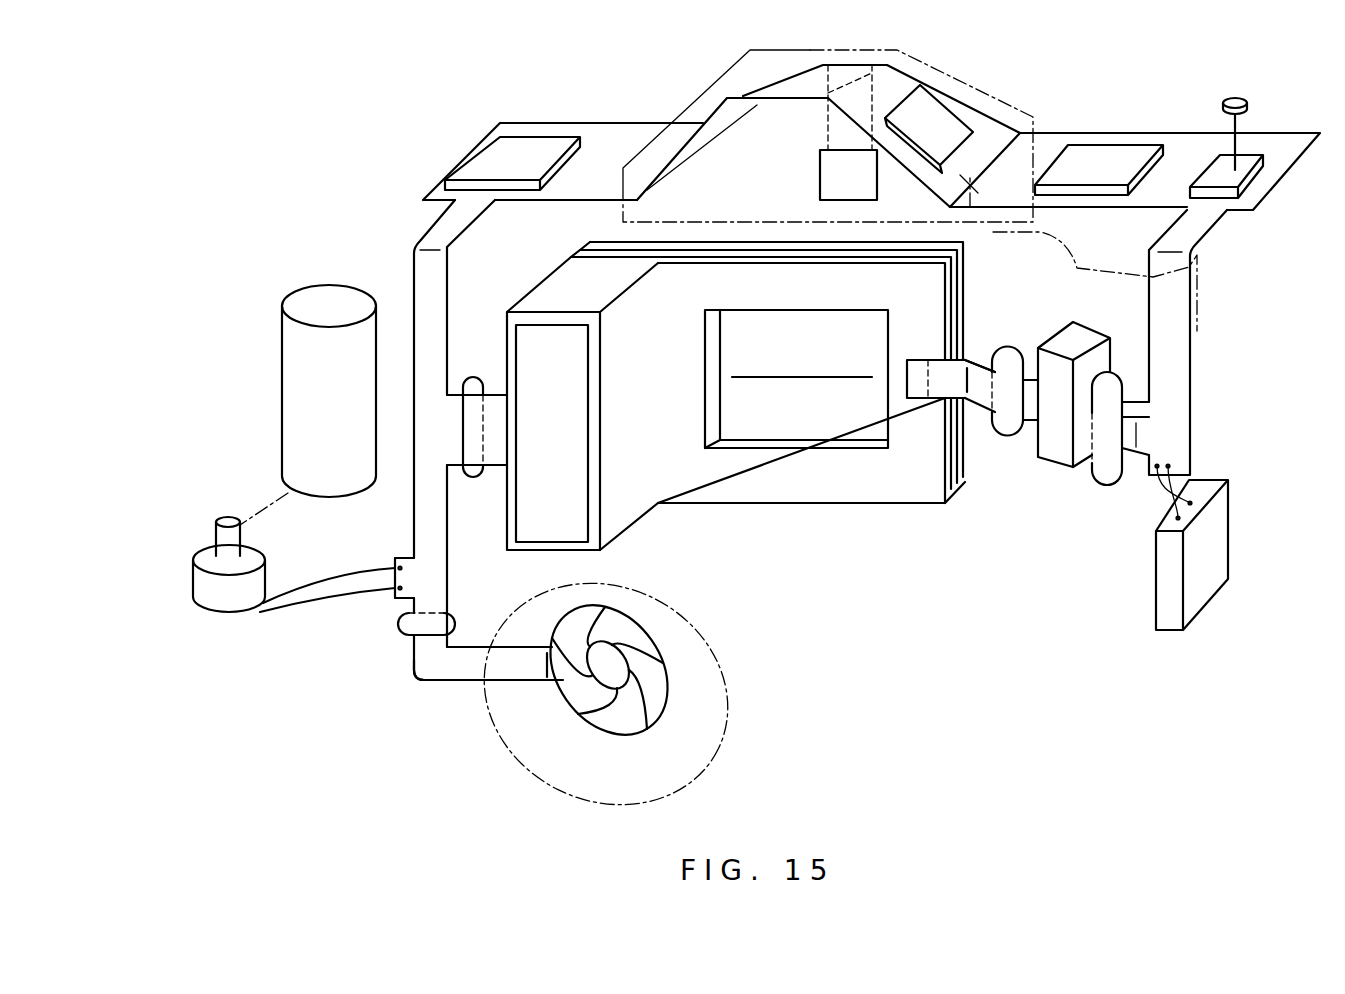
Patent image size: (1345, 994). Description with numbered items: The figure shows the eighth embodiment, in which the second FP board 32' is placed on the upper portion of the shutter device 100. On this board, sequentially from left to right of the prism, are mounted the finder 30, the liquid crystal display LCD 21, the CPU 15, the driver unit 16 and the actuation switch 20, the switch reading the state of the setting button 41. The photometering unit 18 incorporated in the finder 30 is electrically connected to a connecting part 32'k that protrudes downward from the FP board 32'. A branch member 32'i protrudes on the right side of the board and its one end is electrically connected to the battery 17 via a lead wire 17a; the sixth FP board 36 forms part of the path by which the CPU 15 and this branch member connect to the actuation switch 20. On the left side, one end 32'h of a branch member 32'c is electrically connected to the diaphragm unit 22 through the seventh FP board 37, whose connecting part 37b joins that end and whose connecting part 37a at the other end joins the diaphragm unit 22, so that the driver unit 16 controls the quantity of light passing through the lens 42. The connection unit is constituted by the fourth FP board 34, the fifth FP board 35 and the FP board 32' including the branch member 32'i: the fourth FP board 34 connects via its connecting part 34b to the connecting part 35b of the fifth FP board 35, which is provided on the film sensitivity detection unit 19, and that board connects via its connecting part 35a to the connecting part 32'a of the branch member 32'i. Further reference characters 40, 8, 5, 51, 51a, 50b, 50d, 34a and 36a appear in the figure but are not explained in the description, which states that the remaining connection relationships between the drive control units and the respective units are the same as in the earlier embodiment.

The finder 30 is at (717, 80).
The second FP board 32' is at (871, 133).
The connecting part 32'k is at (806, 110).
The branch member 32'c is at (412, 438).
The branch member 32'i is at (1205, 342).
The connecting part 32'a is at (1193, 417).
The end of branch member 32'h is at (386, 627).
The liquid crystal display LCD 21 is at (486, 152).
The CPU 15 is at (935, 115).
The driver unit 16 is at (1108, 148).
The setting button 41 is at (1235, 96).
The actuation switch 20 is at (1262, 176).
The photometering unit 18 is at (866, 192).
The grip portion outline 40 is at (1077, 268).
The film sensitivity detection unit 19 is at (1098, 336).
The display unit layers 8 is at (920, 362).
The frame 51 is at (522, 332).
The connector pin 51a is at (473, 378).
The connecting bridge 50b is at (472, 480).
The connector 50d is at (405, 558).
The display housing 5 is at (632, 507).
The shutter device 100 is at (845, 515).
The fourth FP board 34 is at (978, 388).
The connector strip 34a is at (915, 400).
The connecting part 34b is at (1010, 437).
The fifth FP board 35 is at (1055, 460).
The connecting part 35a is at (1105, 486).
The connecting part 35b is at (1022, 334).
The battery 17 is at (1188, 612).
The lead wire 17a is at (1185, 476).
The sixth FP board 36 is at (205, 605).
The ribbon cable 36a is at (280, 614).
The seventh FP board 37 is at (450, 682).
The connecting part 37a is at (553, 676).
The connecting part 37b is at (405, 652).
The diaphragm unit 22 is at (626, 732).
The lens 42 is at (703, 762).